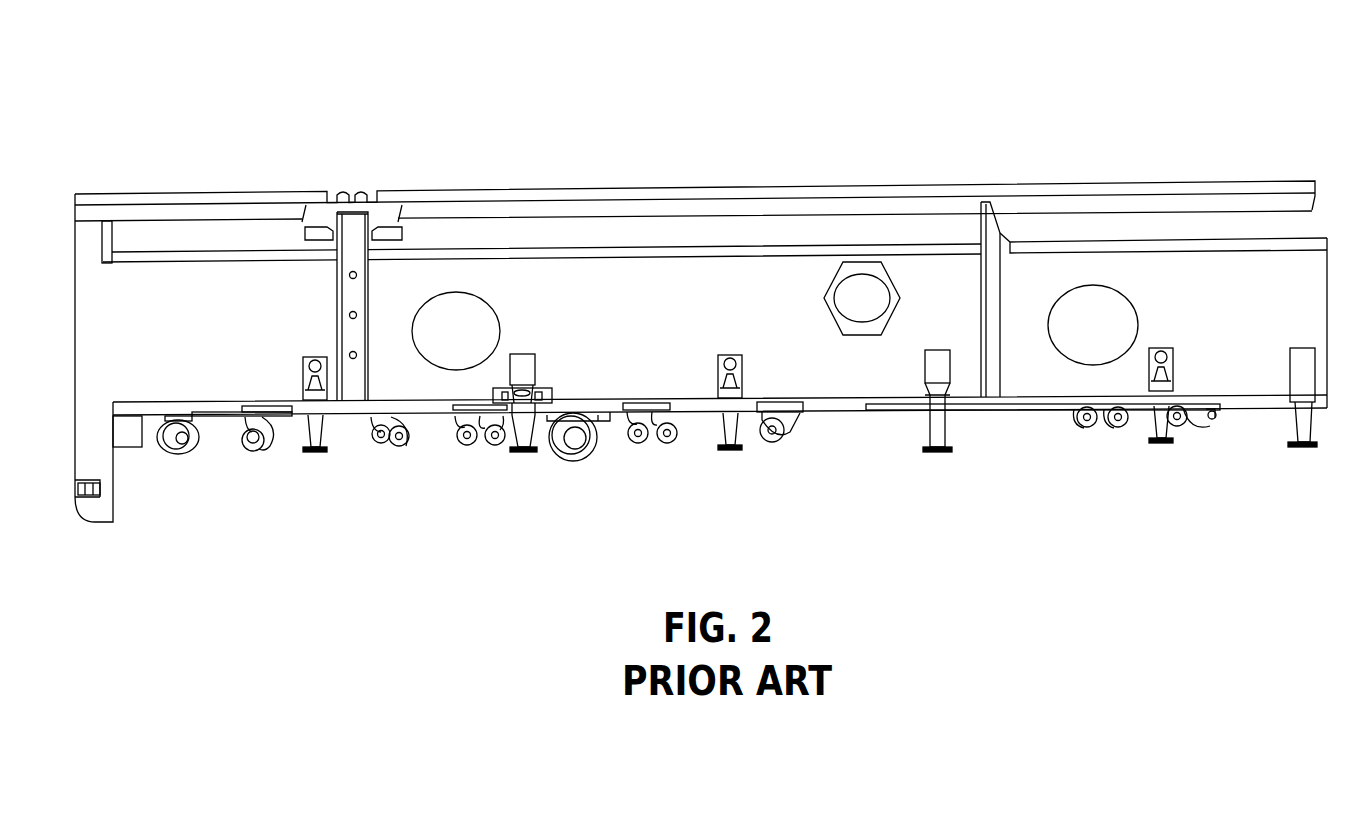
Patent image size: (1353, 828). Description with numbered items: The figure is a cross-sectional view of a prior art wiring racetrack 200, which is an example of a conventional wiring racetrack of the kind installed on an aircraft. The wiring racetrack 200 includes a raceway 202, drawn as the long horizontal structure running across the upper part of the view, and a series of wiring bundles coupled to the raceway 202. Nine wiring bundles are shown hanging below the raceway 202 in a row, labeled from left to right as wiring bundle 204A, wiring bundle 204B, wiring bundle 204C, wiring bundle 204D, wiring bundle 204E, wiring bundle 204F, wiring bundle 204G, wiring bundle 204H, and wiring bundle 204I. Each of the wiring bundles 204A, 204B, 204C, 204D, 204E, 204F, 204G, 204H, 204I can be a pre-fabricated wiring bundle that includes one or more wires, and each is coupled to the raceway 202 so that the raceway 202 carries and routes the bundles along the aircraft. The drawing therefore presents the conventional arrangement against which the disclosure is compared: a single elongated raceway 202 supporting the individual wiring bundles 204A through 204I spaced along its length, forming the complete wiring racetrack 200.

The wiring racetrack 200 is at (423, 105).
The raceway 202 is at (723, 268).
The wiring bundle 204A is at (180, 453).
The wiring bundle 204B is at (260, 450).
The wiring bundle 204C is at (389, 450).
The wiring bundle 204D is at (490, 447).
The wiring bundle 204E is at (585, 459).
The wiring bundle 204F is at (667, 445).
The wiring bundle 204G is at (780, 441).
The wiring bundle 204H is at (1108, 428).
The wiring bundle 204I is at (1197, 428).